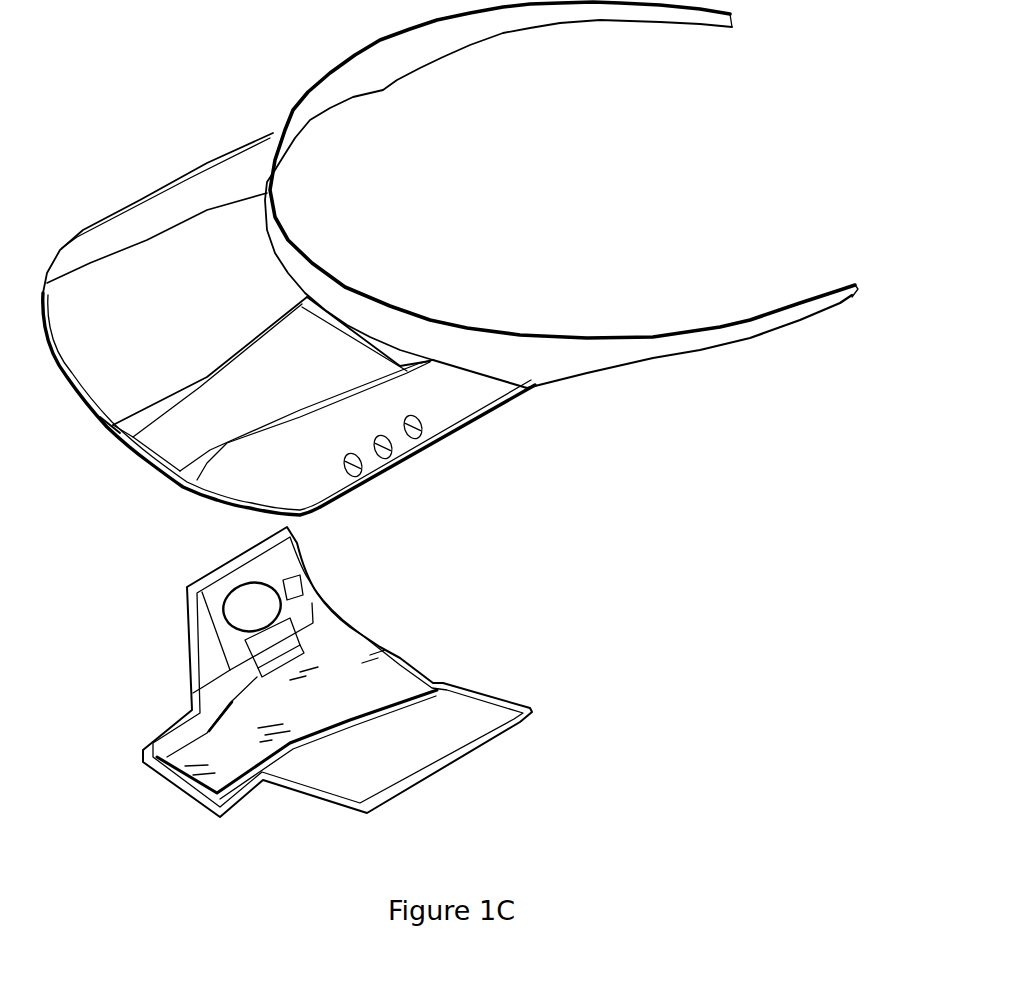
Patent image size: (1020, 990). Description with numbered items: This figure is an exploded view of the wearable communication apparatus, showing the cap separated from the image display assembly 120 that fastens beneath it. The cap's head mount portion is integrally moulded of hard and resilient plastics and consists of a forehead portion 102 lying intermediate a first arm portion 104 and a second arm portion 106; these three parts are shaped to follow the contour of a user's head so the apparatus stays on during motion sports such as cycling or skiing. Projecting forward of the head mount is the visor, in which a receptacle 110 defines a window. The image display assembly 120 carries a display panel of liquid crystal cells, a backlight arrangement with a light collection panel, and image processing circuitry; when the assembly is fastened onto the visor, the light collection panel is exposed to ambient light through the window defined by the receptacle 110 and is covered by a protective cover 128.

The forehead portion 102 is at (288, 263).
The first arm portion 104 is at (692, 342).
The second arm portion 106 is at (515, 15).
The receptacle 110 is at (273, 388).
The image display assembly 120 is at (578, 689).
The protective cover 128 is at (362, 702).